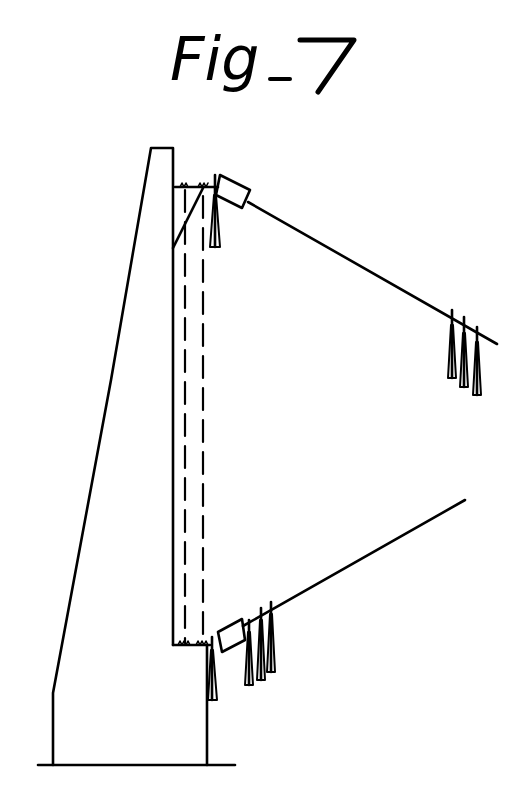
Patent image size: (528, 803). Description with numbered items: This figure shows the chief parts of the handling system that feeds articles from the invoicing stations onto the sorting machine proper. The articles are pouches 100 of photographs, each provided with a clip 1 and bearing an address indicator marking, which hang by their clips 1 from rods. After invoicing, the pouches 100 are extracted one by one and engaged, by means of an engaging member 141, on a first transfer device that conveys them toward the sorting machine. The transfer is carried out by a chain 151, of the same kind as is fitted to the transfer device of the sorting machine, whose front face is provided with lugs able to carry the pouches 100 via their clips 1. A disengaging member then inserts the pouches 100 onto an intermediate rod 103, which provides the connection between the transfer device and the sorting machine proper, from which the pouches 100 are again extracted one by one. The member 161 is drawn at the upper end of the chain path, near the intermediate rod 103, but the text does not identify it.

The clip 1 is at (374, 483).
The pouch 100 is at (481, 393).
The intermediate rod 103 is at (367, 270).
The engaging member 141 is at (230, 624).
The chain 151 is at (184, 648).
The upper coupling box 161 is at (237, 189).